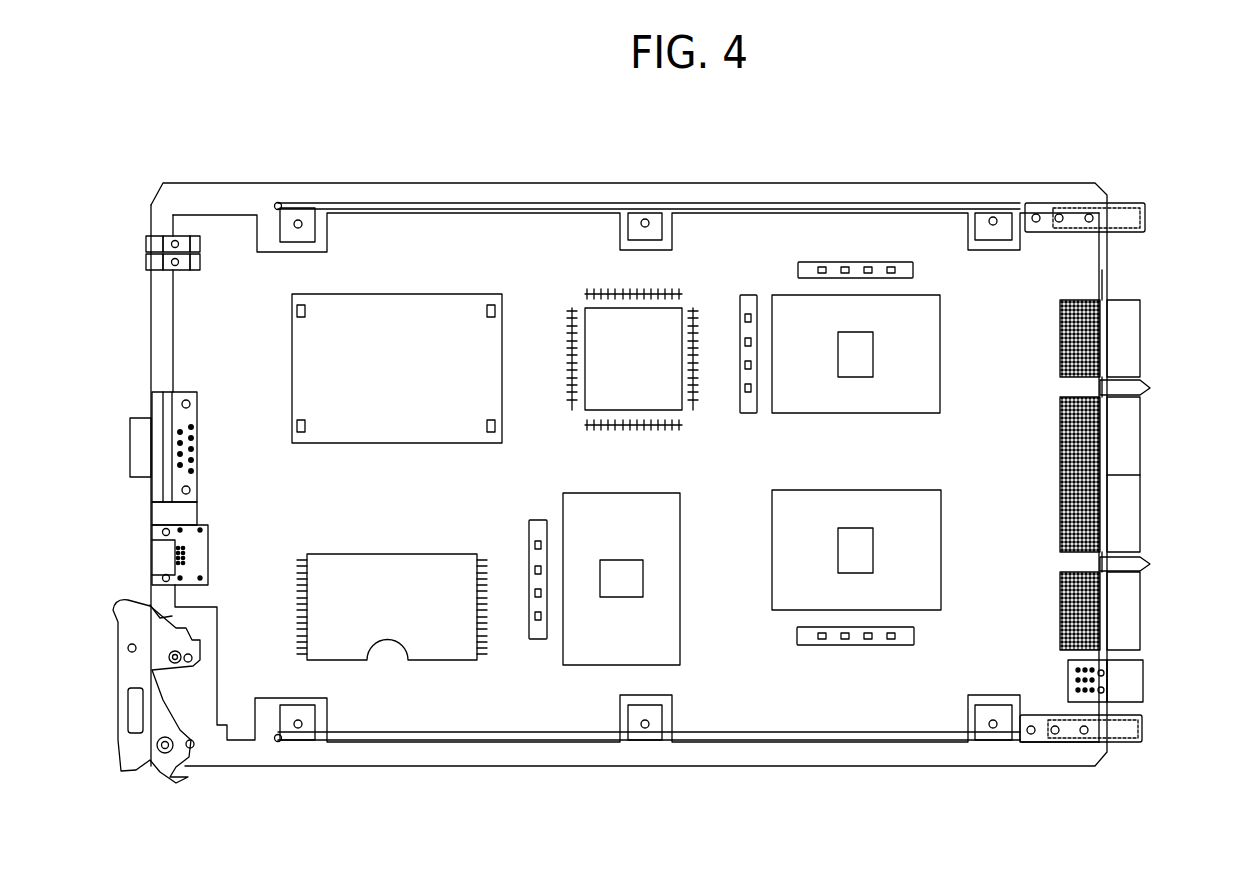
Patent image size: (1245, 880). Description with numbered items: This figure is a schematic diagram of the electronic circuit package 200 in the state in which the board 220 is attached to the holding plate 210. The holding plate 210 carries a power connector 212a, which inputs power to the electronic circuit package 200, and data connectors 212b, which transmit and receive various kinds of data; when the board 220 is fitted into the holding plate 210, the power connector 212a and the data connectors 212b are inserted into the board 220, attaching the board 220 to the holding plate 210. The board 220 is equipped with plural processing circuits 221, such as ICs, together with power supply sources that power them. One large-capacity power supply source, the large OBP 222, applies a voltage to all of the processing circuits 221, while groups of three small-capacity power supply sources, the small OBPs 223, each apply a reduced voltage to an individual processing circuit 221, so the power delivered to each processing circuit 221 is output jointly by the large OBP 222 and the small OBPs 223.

The electronic circuit package 200 is at (1127, 151).
The holding plate 210 is at (1042, 200).
The board 220 is at (508, 240).
The processing circuit 221 is at (798, 561).
The power supply source (large OBP) 222 is at (746, 293).
The power supply source (small OBP) 223 is at (870, 258).
The power connector 212a is at (1128, 686).
The data connector 212b is at (1120, 450).